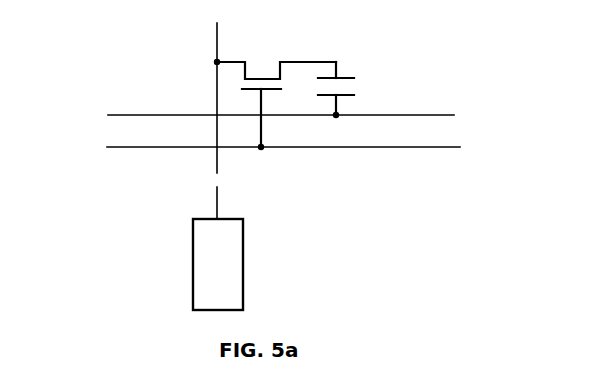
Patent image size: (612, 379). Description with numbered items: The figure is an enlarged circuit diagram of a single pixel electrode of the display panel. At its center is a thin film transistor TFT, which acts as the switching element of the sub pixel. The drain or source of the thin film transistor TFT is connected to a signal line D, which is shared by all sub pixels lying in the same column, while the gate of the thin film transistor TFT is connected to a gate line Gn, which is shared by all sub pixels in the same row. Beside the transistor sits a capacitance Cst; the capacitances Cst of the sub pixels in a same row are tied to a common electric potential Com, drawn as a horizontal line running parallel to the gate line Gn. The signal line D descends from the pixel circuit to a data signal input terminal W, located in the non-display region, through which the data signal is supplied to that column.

The thin film transistor TFT is at (275, 86).
The capacitance Cst is at (351, 90).
The common electric potential Com is at (255, 105).
The gate line Gn is at (264, 144).
The signal line D is at (219, 173).
The data signal input terminal W is at (218, 264).